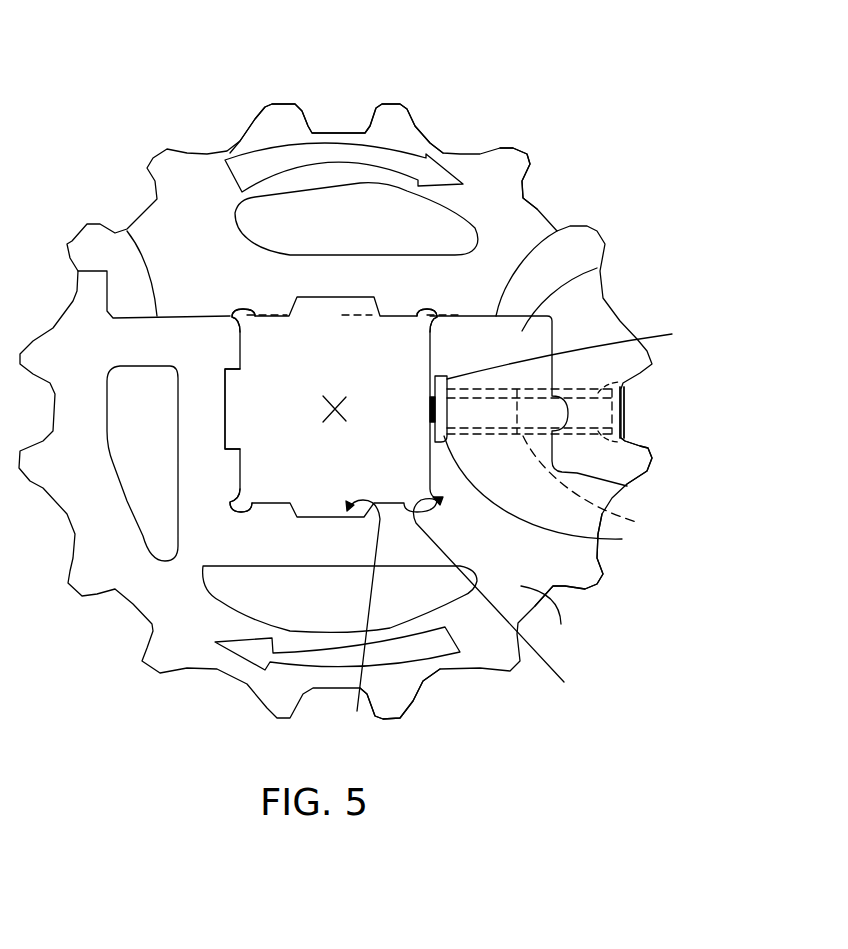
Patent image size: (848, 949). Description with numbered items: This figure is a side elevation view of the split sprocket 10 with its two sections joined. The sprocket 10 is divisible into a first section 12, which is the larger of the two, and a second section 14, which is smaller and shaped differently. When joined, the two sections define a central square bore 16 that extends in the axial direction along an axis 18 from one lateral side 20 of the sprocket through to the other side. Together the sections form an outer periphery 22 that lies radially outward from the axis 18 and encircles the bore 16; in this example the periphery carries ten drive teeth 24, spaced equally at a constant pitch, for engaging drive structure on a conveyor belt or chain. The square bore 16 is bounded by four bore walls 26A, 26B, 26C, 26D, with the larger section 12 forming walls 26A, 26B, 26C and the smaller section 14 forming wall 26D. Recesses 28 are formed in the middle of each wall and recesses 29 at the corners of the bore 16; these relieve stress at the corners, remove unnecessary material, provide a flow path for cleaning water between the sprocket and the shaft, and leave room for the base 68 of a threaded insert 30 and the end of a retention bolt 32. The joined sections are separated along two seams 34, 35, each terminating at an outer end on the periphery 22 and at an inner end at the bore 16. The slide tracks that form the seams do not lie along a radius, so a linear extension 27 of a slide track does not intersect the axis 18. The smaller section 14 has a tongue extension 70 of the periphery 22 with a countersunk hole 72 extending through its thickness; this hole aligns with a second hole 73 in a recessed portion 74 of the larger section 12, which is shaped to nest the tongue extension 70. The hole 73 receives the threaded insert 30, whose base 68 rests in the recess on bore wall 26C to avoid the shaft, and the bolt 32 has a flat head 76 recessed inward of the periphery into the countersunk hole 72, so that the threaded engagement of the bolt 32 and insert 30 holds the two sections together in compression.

The sprocket 10 is at (201, 70).
The first section 12 is at (353, 555).
The second section 14 is at (381, 285).
The central square bore 16 is at (356, 370).
The axis 18 is at (337, 421).
The lateral side 20 is at (562, 584).
The outer periphery 22 is at (426, 698).
The drive teeth 24 is at (300, 112).
The bore wall 26A is at (226, 410).
The bore wall 26B is at (337, 518).
The bore wall 26C is at (430, 348).
The bore wall 26D is at (330, 303).
The linear extension 27 is at (352, 316).
The recesses 28 is at (356, 617).
The recesses 29 is at (499, 594).
The threaded insert 30 is at (546, 494).
The retention bolt 32 is at (574, 351).
The seam 34 is at (558, 231).
The seam 35 is at (133, 233).
The base 68 is at (433, 423).
The tongue extension 70 is at (632, 468).
The hole 72 is at (634, 382).
The second hole 73 is at (599, 484).
The recessed portion 74 is at (597, 267).
The flat head 76 is at (625, 412).